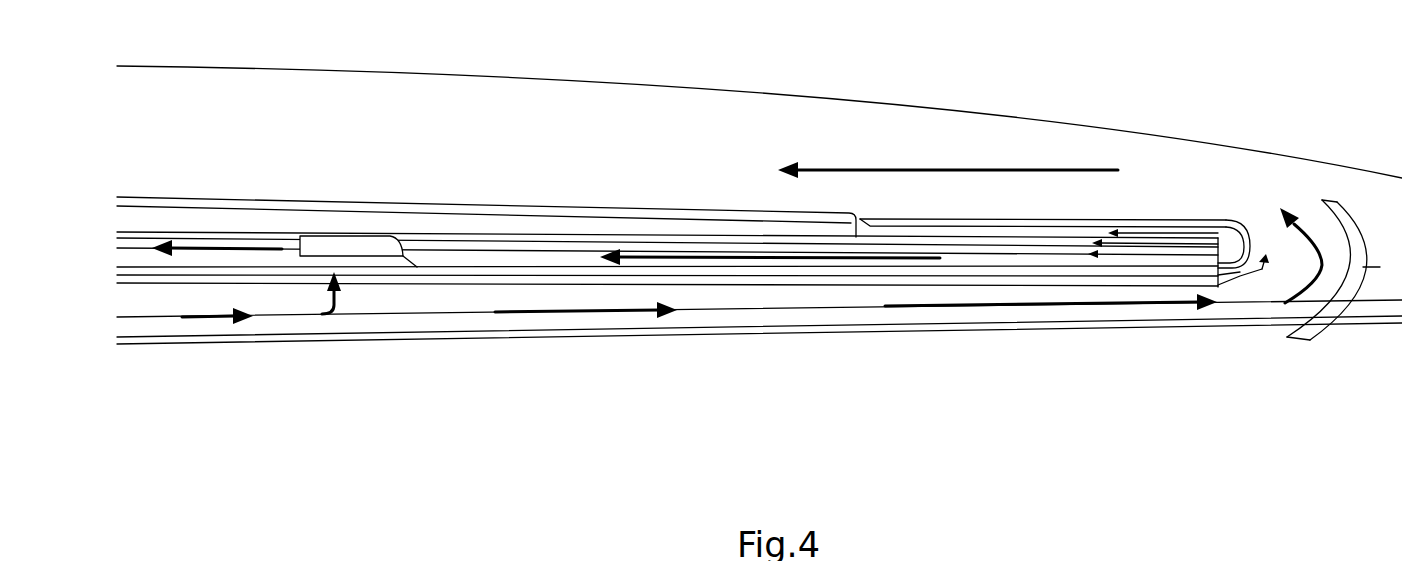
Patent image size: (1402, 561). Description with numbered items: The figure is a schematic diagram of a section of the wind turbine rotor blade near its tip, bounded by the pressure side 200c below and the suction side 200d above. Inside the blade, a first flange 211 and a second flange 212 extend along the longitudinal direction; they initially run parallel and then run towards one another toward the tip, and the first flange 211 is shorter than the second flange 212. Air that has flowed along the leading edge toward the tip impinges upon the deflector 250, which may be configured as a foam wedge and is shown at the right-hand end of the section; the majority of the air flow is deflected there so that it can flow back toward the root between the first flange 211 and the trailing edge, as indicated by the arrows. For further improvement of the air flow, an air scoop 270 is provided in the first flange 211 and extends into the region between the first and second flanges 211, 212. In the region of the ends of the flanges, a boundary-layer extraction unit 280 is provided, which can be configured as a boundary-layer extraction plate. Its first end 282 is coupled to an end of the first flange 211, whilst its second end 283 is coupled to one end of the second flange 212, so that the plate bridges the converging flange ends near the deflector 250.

The pressure side 200c is at (802, 365).
The suction side 200d is at (798, 64).
The first flange 211 is at (473, 205).
The second flange 212 is at (168, 283).
The air scoop 270 is at (378, 256).
The boundary-layer extraction unit 280 is at (1231, 224).
The first end 282 is at (947, 220).
The second end 283 is at (1240, 270).
The deflector 250 is at (1316, 338).